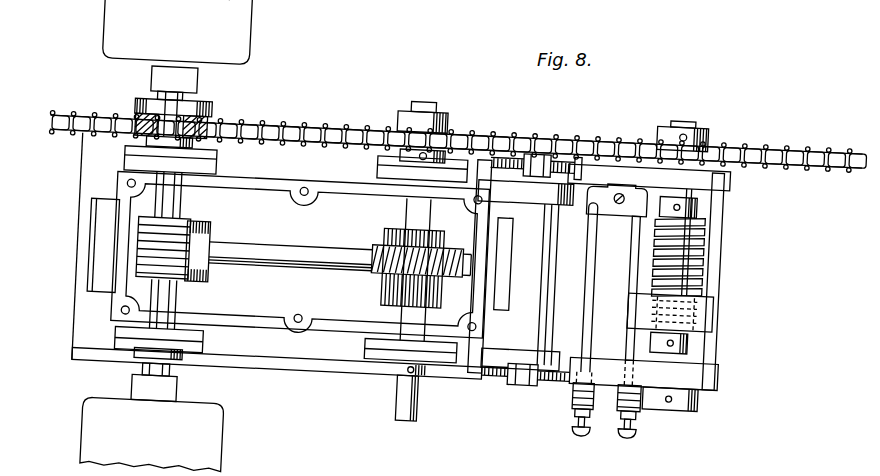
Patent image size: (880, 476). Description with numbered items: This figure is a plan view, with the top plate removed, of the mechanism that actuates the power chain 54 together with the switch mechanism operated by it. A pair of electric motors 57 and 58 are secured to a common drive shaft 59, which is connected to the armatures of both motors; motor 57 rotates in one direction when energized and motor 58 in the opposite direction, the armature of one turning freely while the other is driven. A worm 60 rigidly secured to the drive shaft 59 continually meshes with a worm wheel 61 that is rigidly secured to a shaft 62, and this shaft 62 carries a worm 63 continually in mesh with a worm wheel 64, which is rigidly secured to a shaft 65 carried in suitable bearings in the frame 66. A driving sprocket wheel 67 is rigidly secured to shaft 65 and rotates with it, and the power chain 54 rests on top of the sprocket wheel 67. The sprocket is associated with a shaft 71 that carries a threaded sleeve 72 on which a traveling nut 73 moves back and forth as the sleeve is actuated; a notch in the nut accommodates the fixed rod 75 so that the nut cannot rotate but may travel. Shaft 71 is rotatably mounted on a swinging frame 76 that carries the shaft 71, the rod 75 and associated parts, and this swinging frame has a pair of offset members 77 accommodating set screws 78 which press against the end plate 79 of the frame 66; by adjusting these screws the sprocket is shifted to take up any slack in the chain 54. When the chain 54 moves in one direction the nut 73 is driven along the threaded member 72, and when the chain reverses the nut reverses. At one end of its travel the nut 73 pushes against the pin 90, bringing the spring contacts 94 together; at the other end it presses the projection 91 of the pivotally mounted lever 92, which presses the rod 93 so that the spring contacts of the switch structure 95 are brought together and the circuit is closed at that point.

The power chain 54 is at (336, 127).
The electric motor 57 is at (238, 43).
The electric motor 58 is at (226, 457).
The drive shaft 59 is at (170, 371).
The worm 60 is at (164, 233).
The worm wheel 61 is at (197, 278).
The shaft 62 is at (315, 253).
The worm 63 is at (385, 297).
The worm wheel 64 is at (378, 275).
The shaft 65 is at (418, 417).
The frame 66 is at (348, 332).
The driving sprocket wheel 67 is at (418, 142).
The shaft 71 is at (708, 363).
The threaded sleeve 72 is at (699, 256).
The traveling nut 73 is at (703, 309).
The fixed rod 75 is at (709, 343).
The swinging frame 76 is at (697, 384).
The offset member 77 is at (530, 378).
The set screw 78 is at (549, 380).
The end plate 79 is at (481, 315).
The pin 90 is at (630, 352).
The projection 91 is at (638, 214).
The pivotally mounted lever 92 is at (616, 212).
The rod 93 is at (590, 243).
The spring contacts 94 is at (616, 392).
The switch structure 95 is at (574, 394).